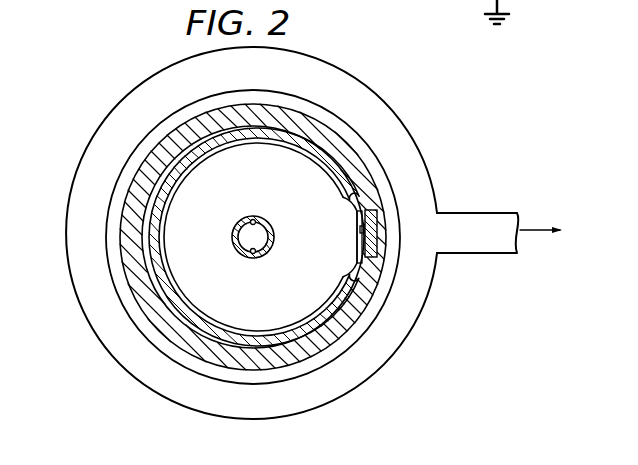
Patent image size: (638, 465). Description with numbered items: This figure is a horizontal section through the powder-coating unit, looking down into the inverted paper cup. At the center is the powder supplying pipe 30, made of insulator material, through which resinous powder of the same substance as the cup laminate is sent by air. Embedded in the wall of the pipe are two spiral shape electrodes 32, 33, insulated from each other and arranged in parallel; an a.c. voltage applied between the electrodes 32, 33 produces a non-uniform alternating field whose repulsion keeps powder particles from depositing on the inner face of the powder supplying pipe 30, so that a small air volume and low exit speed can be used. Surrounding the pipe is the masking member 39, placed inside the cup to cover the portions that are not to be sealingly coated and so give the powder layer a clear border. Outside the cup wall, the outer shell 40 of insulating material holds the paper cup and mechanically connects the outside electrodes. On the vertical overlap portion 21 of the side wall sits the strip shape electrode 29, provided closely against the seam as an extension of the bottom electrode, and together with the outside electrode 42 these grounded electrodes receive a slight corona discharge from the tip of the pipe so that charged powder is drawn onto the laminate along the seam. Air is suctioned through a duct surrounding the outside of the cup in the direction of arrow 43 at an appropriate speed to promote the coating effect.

The overlap portion of the side wall 21 is at (358, 232).
The strip shape electrode 29 is at (379, 224).
The powder supplying pipe 30 is at (274, 234).
The spiral shape electrode 32 is at (269, 246).
The spiral shape electrode 33 is at (255, 219).
The masking member 39 is at (288, 140).
The outer shell 40 is at (334, 139).
The outside electrode 42 is at (397, 133).
The air suction arrow 43 is at (536, 224).